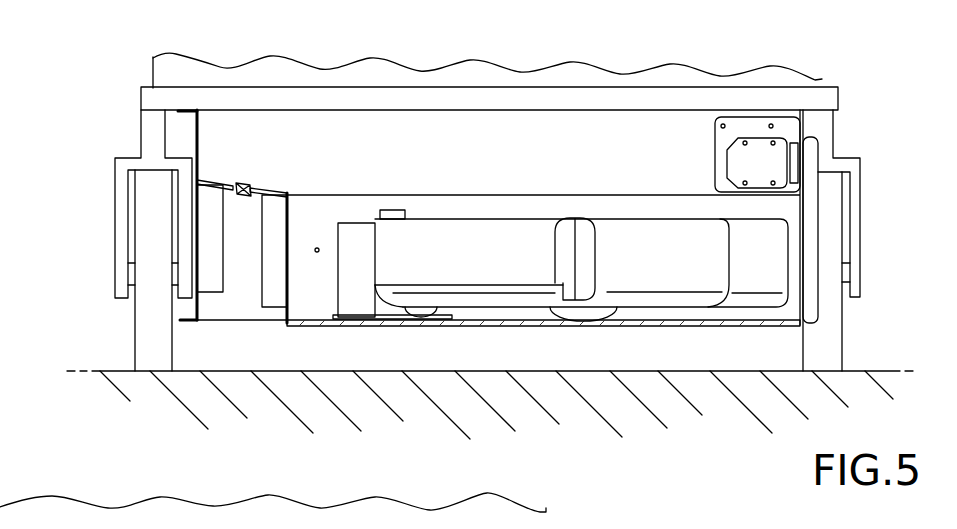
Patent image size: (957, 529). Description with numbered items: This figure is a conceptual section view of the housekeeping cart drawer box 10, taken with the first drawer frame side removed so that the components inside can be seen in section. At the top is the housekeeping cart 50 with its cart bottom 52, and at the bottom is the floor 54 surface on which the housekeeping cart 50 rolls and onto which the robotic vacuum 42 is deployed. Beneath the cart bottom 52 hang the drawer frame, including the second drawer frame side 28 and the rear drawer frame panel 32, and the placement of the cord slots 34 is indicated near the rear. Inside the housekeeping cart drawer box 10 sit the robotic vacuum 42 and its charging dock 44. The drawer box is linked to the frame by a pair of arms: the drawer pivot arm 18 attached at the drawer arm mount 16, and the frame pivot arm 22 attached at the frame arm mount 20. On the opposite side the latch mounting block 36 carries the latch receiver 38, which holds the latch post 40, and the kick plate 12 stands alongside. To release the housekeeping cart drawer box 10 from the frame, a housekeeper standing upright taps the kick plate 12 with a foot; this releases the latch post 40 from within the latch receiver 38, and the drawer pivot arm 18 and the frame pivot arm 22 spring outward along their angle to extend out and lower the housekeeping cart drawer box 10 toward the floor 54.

The housekeeping cart drawer box 10 is at (400, 325).
The kick plate 12 is at (815, 218).
The drawer arm mount 16 is at (273, 298).
The drawer pivot arm 18 is at (263, 193).
The frame arm mount 20 is at (215, 288).
The frame pivot arm 22 is at (217, 180).
The second drawer frame side 28 is at (252, 307).
The rear drawer frame panel 32 is at (198, 142).
The cord slots 34 is at (198, 248).
The latch mounting block 36 is at (723, 132).
The latch receiver 38 is at (737, 160).
The latch post 40 is at (800, 158).
The robotic vacuum 42 is at (525, 225).
The charging dock 44 is at (347, 225).
The housekeeping cart 50 is at (160, 72).
The cart bottom 52 is at (312, 112).
The floor 54 is at (880, 371).